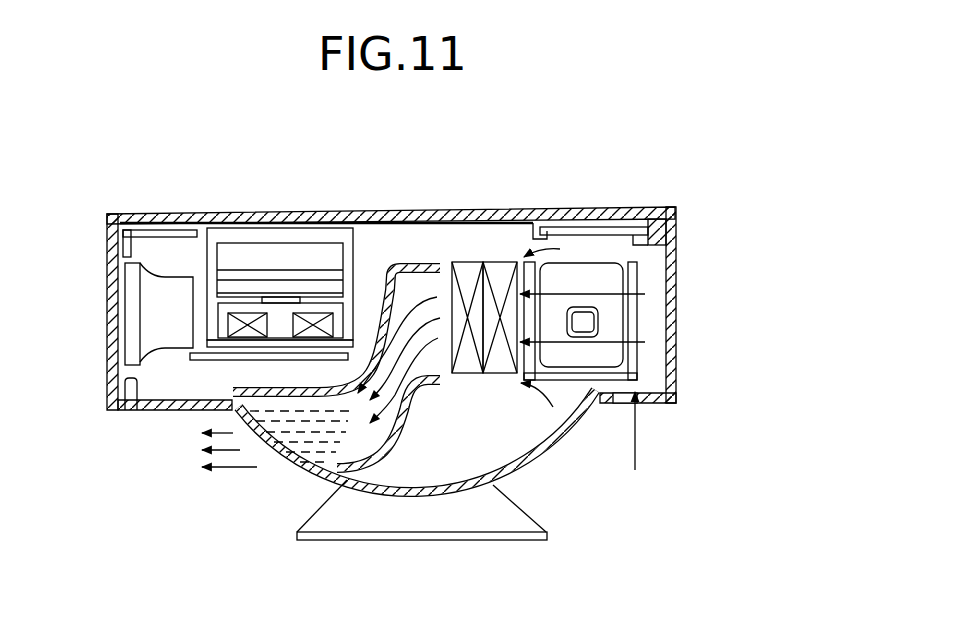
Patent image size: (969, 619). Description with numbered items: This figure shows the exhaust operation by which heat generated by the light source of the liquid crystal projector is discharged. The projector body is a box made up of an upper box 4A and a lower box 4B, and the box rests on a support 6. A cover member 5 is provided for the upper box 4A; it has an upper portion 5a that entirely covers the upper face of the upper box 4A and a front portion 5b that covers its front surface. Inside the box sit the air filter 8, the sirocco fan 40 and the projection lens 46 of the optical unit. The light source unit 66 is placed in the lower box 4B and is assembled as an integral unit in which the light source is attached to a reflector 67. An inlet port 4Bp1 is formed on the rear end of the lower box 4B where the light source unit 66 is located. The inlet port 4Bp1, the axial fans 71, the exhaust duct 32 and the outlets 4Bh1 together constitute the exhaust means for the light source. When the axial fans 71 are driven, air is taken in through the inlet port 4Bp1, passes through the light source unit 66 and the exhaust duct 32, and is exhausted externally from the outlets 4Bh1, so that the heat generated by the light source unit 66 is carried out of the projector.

The cover member 5 is at (572, 206).
The upper portion 5a is at (235, 222).
The front portion 5b is at (115, 328).
The upper box 4A is at (678, 310).
The lower box 4B is at (558, 450).
The inlet port 4Bp1 is at (645, 400).
The outlets 4Bh1 is at (278, 457).
The projection lens 46 is at (150, 307).
The air filter 8 is at (272, 250).
The sirocco fan 40 is at (313, 312).
The axial fans 71 is at (468, 262).
The light source unit 66 is at (644, 287).
The reflector 67 is at (600, 277).
The exhaust duct 32 is at (412, 405).
The support 6 is at (497, 522).